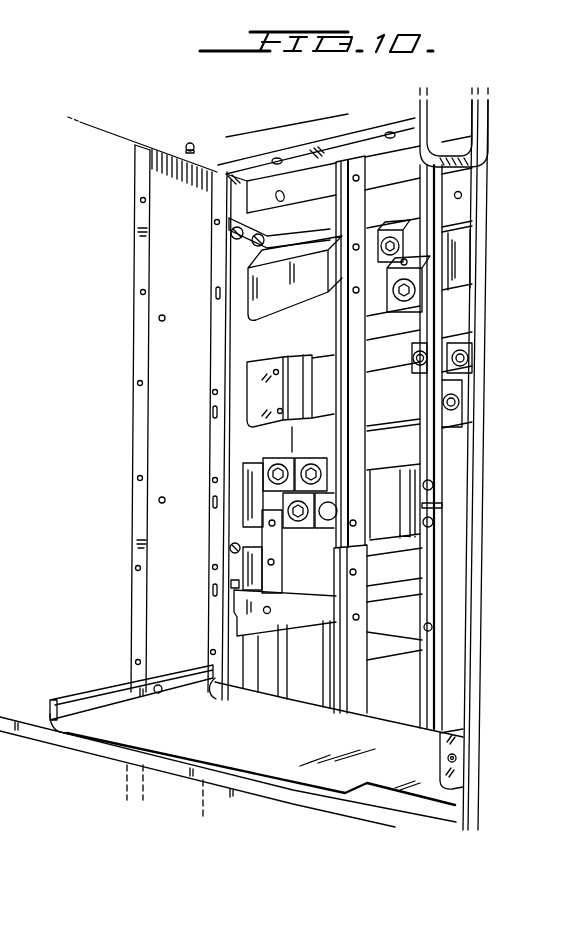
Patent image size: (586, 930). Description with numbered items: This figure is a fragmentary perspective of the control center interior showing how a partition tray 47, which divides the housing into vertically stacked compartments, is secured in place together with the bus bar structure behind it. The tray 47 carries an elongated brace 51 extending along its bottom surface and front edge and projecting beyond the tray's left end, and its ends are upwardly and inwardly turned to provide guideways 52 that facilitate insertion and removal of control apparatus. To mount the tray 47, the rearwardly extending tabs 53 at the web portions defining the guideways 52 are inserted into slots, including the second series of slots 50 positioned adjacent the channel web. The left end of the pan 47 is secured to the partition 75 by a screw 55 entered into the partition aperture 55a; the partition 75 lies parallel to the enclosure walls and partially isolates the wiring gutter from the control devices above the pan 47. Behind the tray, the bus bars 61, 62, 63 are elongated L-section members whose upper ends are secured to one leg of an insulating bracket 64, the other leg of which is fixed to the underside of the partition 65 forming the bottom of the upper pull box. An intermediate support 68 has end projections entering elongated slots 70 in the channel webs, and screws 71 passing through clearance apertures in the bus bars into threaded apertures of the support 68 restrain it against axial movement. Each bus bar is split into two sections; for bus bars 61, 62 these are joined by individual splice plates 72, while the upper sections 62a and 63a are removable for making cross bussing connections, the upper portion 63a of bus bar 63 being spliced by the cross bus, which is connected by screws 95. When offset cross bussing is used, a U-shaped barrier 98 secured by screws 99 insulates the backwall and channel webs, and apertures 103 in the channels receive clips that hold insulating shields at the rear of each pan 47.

The partition tray 47 is at (294, 750).
The second series of slots 50 is at (210, 502).
The elongated brace 51 is at (30, 700).
The guideway 52 is at (125, 700).
The rearwardly extending tab 53 is at (218, 690).
The screw 55 is at (161, 683).
The partition aperture 55a is at (164, 504).
The bus bar 61 is at (288, 682).
The bus bar 62 is at (354, 687).
The upper section of bus bar 62 62a is at (368, 456).
The bus bar 63 is at (426, 701).
The upper section of bus bar 63 63a is at (452, 292).
The insulating bracket 64 is at (260, 194).
The partition 65 is at (206, 116).
The intermediate support 68 is at (312, 644).
The elongated slot 70 is at (231, 587).
The screw 71 is at (266, 616).
The splice plate 72 is at (283, 541).
The partition 75 is at (190, 371).
The screw 95 is at (424, 524).
The U-shaped barrier 98 is at (247, 283).
The screw 99 is at (253, 245).
The aperture 103 is at (208, 300).